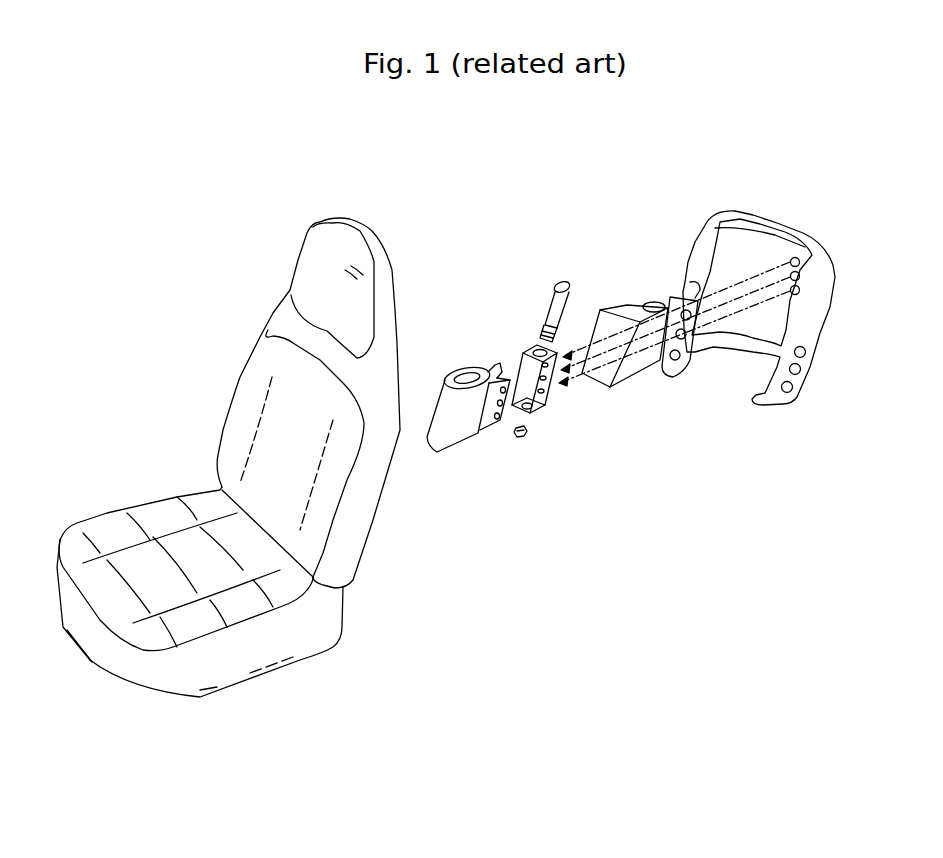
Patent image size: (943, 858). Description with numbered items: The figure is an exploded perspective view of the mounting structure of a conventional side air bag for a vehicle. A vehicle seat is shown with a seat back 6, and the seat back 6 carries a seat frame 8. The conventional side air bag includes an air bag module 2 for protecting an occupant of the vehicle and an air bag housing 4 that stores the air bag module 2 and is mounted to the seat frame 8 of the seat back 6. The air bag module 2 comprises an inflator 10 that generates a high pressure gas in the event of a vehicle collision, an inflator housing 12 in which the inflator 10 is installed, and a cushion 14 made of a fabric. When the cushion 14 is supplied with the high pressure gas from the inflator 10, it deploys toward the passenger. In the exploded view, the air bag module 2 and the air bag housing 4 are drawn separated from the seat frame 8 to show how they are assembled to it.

The air bag module 2 is at (519, 339).
The air bag housing 4 is at (627, 292).
The seat back 6 is at (353, 530).
The seat frame 8 is at (783, 221).
The inflator 10 is at (552, 297).
The inflator housing 12 is at (548, 398).
The cushion 14 is at (463, 435).